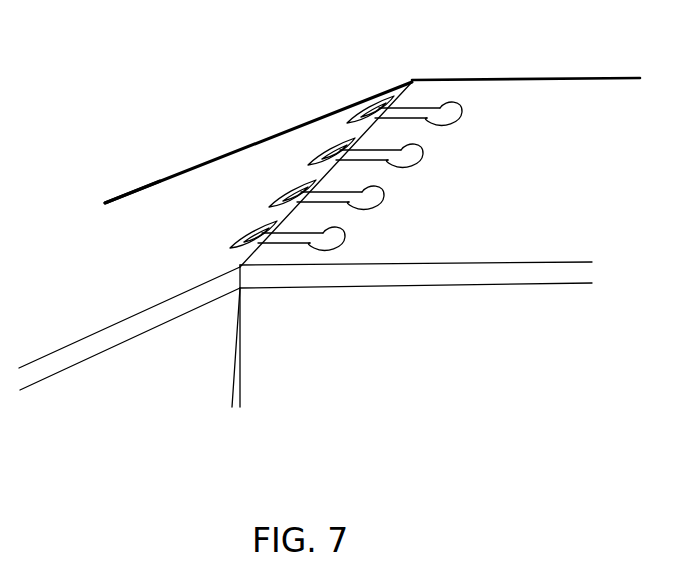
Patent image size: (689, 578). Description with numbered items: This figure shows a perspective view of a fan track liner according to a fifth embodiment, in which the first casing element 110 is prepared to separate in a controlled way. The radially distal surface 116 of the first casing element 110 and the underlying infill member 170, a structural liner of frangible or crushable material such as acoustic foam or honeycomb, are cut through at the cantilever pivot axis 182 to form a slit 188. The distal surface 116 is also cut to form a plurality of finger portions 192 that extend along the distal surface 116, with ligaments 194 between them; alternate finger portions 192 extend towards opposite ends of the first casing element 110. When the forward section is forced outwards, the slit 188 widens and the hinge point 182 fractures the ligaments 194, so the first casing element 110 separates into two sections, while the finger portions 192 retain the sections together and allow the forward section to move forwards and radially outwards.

The first casing element 110 is at (258, 143).
The radially distal surface 116 is at (158, 212).
The cantilever pivot axis 182 is at (413, 82).
The finger portions 192 is at (338, 149).
The ligaments 194 is at (262, 216).
The infill member 170 is at (160, 375).
The slit 188 is at (243, 375).